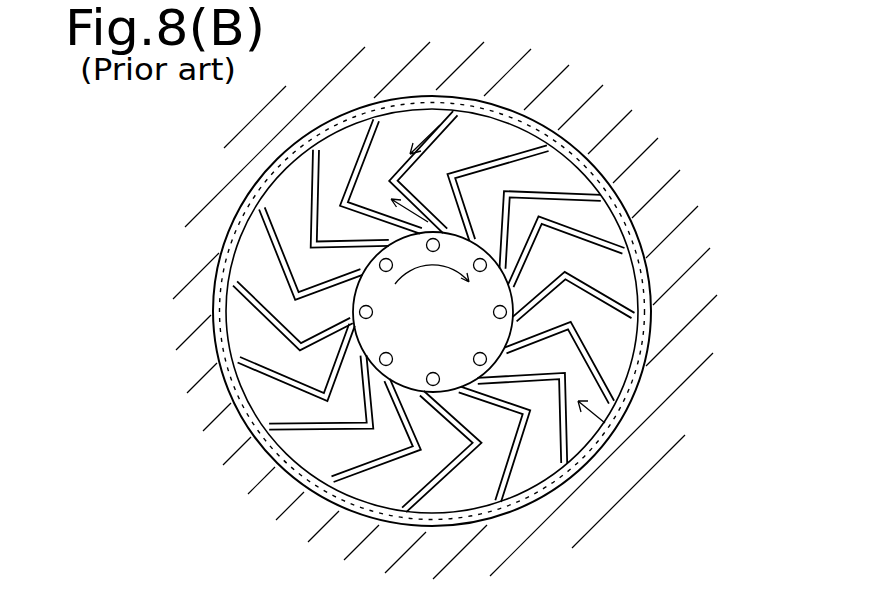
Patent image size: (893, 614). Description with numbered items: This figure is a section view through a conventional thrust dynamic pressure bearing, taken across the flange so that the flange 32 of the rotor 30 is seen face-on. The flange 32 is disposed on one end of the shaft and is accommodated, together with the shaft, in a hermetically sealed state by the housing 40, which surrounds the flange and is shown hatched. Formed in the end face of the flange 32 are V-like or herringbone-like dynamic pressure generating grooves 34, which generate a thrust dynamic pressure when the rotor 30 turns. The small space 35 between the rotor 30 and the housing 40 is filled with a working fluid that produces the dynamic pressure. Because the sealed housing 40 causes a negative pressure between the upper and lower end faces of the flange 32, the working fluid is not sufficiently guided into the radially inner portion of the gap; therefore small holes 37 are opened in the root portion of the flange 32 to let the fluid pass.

The rotor 30 is at (221, 236).
The flange 32 is at (600, 419).
The dynamic pressure generating grooves 34 is at (578, 213).
The small space 35 is at (252, 420).
The small holes 37 is at (508, 309).
The housing 40 is at (577, 132).